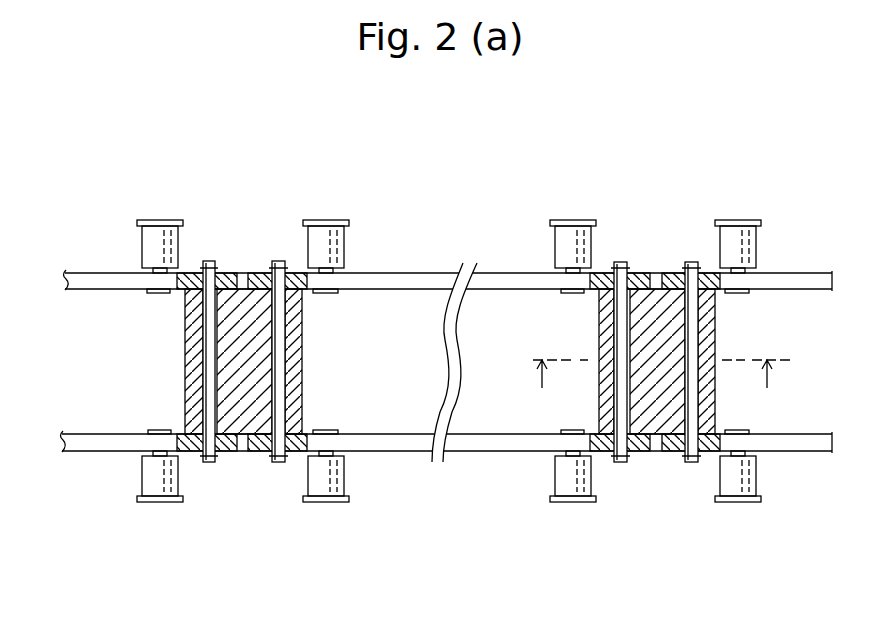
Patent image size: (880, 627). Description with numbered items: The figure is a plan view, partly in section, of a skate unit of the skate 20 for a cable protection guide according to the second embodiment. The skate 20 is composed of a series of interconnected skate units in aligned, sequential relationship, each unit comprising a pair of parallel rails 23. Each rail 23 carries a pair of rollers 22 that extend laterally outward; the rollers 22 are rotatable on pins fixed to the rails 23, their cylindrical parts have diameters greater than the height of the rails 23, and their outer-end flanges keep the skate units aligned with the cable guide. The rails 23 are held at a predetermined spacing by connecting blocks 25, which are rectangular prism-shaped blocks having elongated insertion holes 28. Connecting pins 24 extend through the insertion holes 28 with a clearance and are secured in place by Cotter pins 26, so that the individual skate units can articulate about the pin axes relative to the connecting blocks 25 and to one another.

The skate 20 is at (434, 387).
The roller 22 is at (147, 238).
The rail 23 is at (90, 277).
The connecting pin 24 is at (277, 270).
The connecting block 25 is at (302, 332).
The Cotter pin 26 is at (197, 261).
The insertion hole 28 is at (187, 365).